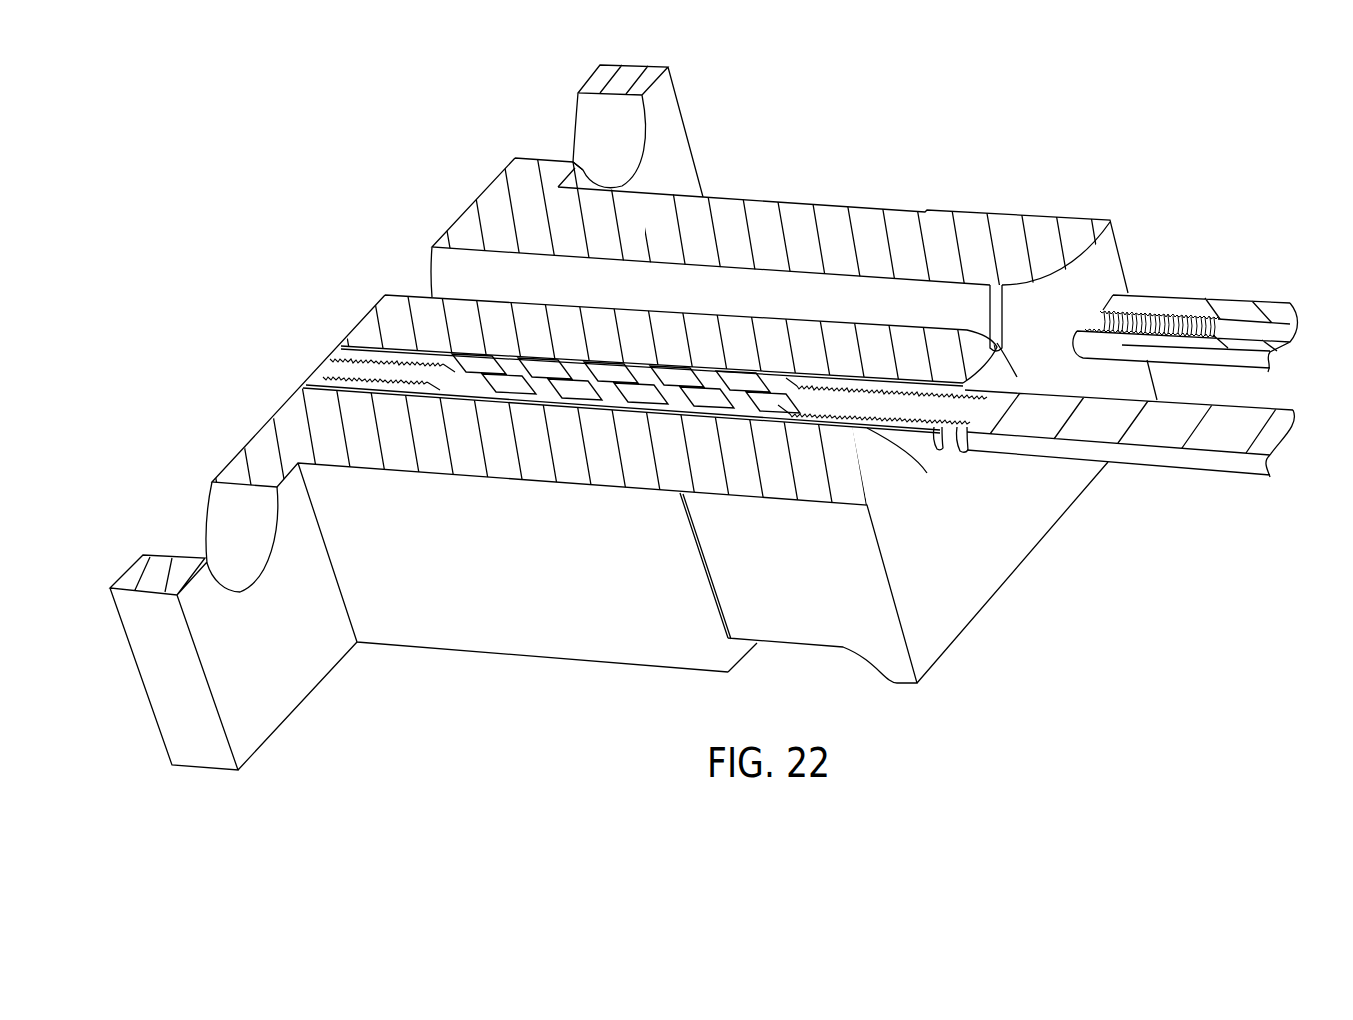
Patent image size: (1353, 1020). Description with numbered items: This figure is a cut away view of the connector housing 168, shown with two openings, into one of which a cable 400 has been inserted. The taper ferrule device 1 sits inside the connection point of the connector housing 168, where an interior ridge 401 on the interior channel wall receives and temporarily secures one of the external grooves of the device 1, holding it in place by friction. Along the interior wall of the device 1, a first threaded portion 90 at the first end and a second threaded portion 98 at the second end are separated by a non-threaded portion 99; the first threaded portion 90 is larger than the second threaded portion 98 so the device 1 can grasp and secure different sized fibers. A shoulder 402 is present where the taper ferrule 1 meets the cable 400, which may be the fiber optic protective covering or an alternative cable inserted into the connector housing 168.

The taper ferrule device 1 is at (1263, 302).
The second threaded portion 98 is at (387, 390).
The non-threaded portion 99 is at (680, 403).
The first threaded portion 90 is at (860, 420).
The connector housing 168 is at (940, 660).
The cable 400 is at (1130, 428).
The interior ridge 401 is at (993, 318).
The shoulder 402 is at (953, 430).